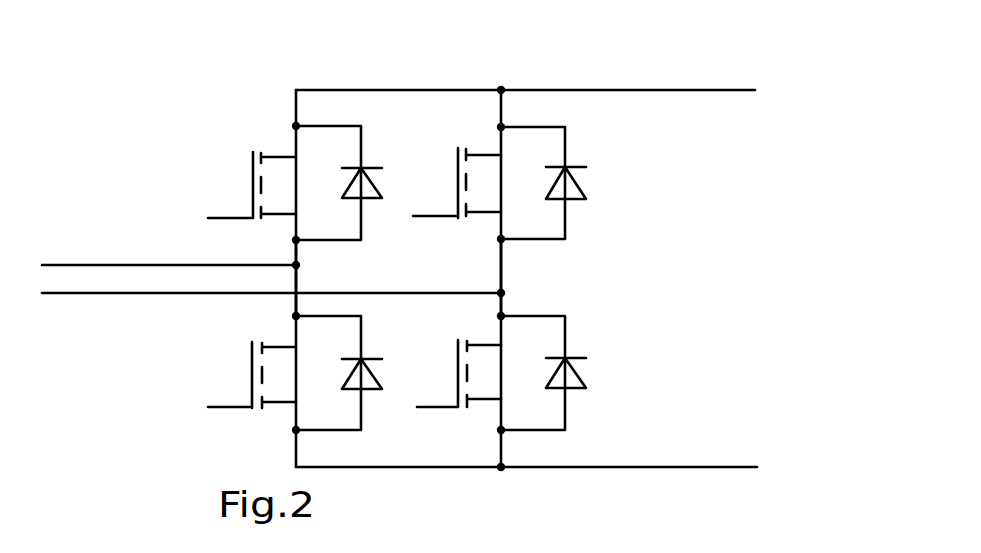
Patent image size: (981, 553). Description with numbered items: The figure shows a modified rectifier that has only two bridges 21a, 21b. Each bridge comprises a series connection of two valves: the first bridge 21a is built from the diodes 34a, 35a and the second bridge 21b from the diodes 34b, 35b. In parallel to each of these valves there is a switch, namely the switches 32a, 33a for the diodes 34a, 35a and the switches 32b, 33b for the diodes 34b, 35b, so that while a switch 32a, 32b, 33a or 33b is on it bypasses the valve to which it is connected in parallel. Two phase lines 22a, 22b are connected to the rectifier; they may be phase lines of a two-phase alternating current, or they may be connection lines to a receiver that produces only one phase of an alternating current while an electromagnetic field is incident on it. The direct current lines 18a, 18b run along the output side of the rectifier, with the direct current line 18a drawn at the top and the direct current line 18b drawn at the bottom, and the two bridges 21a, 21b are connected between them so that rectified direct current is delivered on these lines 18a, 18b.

The direct current line 18a is at (612, 90).
The direct current line 18b is at (625, 467).
The phase line 22a is at (102, 265).
The phase line 22b is at (123, 298).
The bridge 21a is at (298, 282).
The bridge 21b is at (503, 272).
The switch 32a is at (252, 185).
The switch 32b is at (457, 183).
The switch 33a is at (250, 378).
The switch 33b is at (457, 376).
The diode 34a is at (342, 187).
The diode 34b is at (550, 188).
The diode 35a is at (343, 382).
The diode 35b is at (550, 380).